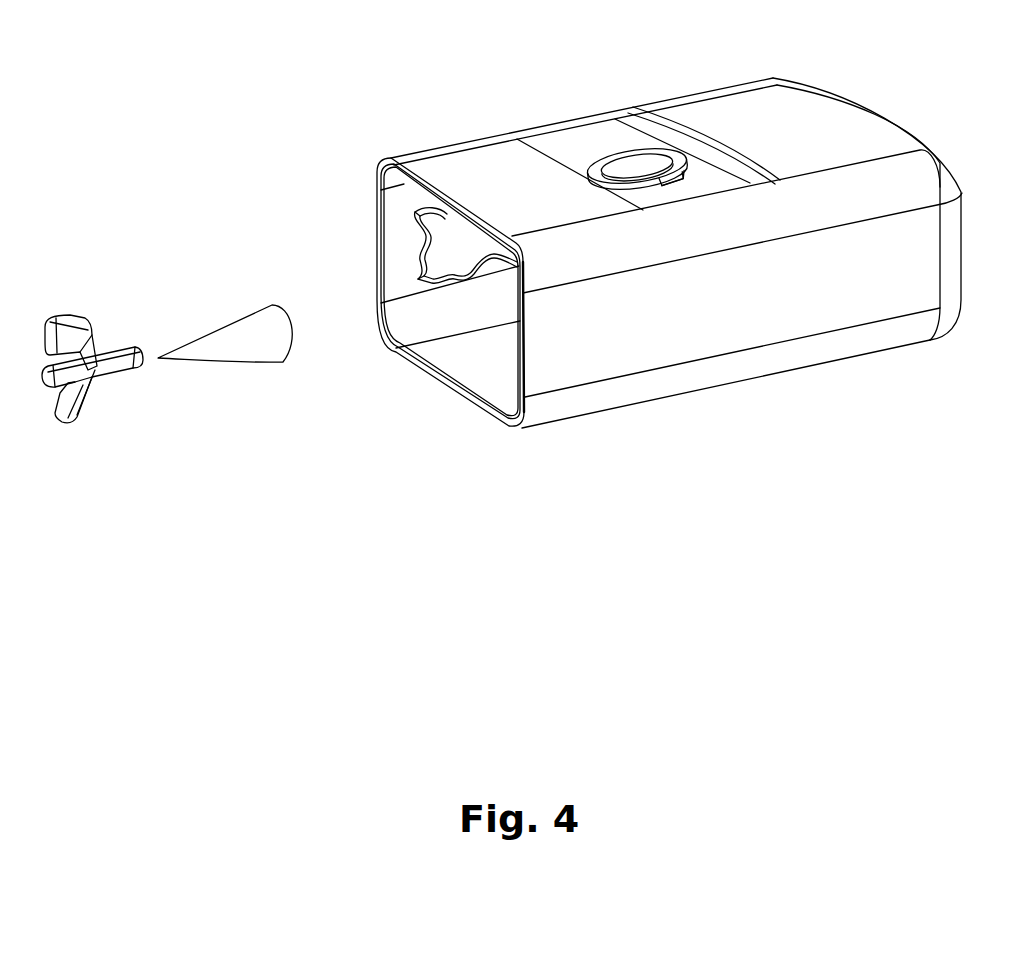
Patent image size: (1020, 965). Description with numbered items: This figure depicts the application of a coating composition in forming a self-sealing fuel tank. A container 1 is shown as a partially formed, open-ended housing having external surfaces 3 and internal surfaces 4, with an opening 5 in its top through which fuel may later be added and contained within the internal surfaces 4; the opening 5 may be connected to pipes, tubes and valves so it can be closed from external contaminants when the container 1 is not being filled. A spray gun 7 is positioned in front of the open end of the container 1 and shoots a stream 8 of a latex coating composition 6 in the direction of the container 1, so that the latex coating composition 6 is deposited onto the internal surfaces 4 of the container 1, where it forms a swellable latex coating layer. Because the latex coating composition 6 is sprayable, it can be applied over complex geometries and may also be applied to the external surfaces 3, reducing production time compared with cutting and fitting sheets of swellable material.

The container 1 is at (843, 101).
The external surfaces 3 is at (855, 278).
The internal surfaces 4 is at (397, 240).
The opening 5 is at (597, 165).
The latex coating composition 6 is at (448, 263).
The spray gun 7 is at (95, 373).
The stream 8 is at (267, 350).